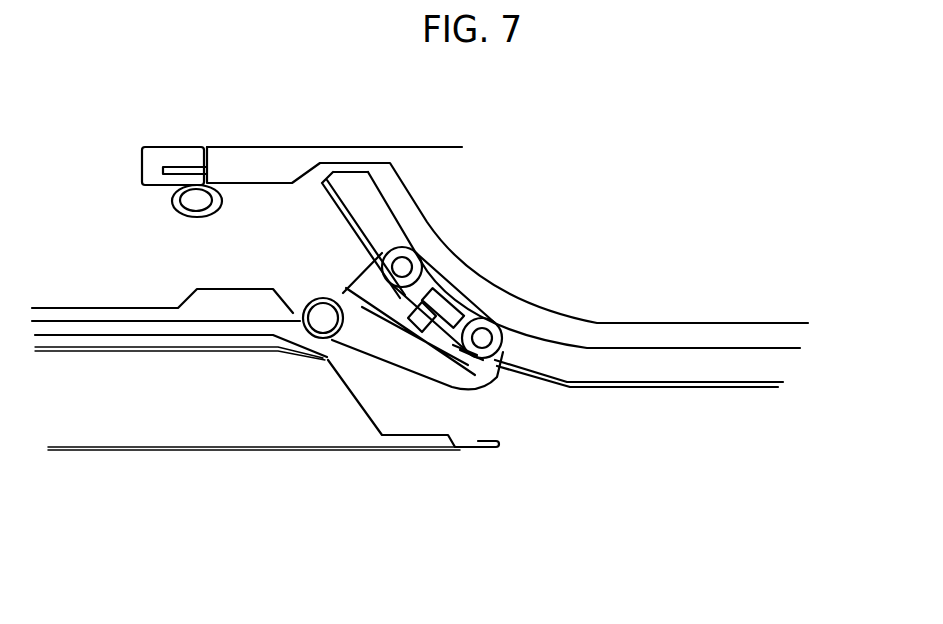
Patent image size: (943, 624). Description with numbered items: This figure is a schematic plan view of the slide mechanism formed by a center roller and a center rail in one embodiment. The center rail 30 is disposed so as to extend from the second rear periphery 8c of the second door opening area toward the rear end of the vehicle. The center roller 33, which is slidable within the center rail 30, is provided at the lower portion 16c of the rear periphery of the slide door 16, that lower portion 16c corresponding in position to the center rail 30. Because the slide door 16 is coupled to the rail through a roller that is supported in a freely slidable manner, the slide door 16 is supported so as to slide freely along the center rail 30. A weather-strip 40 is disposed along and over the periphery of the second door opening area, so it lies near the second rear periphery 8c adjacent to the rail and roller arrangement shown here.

The weather-strip 40 is at (168, 163).
The second rear periphery 8c is at (242, 183).
The center roller 33 is at (377, 330).
The center rail 30 is at (647, 367).
The slide door 16 is at (147, 480).
The lower portion 16c is at (482, 451).